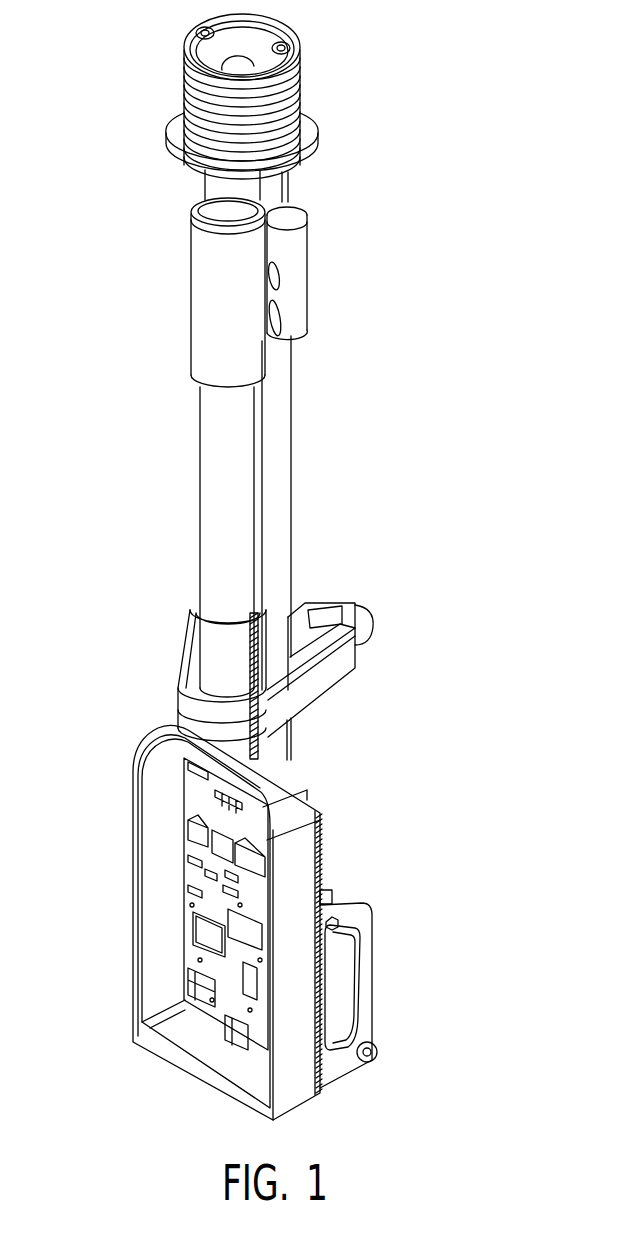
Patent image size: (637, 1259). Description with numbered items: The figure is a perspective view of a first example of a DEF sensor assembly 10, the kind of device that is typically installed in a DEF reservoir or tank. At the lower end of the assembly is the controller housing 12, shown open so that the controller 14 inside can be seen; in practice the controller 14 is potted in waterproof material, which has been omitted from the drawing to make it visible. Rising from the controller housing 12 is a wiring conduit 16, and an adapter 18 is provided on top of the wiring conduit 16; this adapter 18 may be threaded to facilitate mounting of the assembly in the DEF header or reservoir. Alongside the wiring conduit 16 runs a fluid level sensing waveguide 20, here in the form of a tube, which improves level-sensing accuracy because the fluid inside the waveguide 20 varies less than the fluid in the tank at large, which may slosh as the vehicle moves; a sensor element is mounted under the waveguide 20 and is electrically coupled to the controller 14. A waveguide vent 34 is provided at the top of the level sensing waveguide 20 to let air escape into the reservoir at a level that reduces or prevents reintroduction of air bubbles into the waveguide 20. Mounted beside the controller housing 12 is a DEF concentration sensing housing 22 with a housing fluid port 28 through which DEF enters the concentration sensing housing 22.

The DEF sensor assembly 10 is at (473, 604).
The controller housing 12 is at (150, 953).
The controller 14 is at (197, 870).
The wiring conduit 16 is at (211, 530).
The adapter 18 is at (172, 120).
The fluid level sensing waveguide 20 is at (278, 497).
The DEF concentration sensing housing 22 is at (330, 892).
The housing fluid port 28 is at (362, 950).
The waveguide vent 34 is at (289, 206).